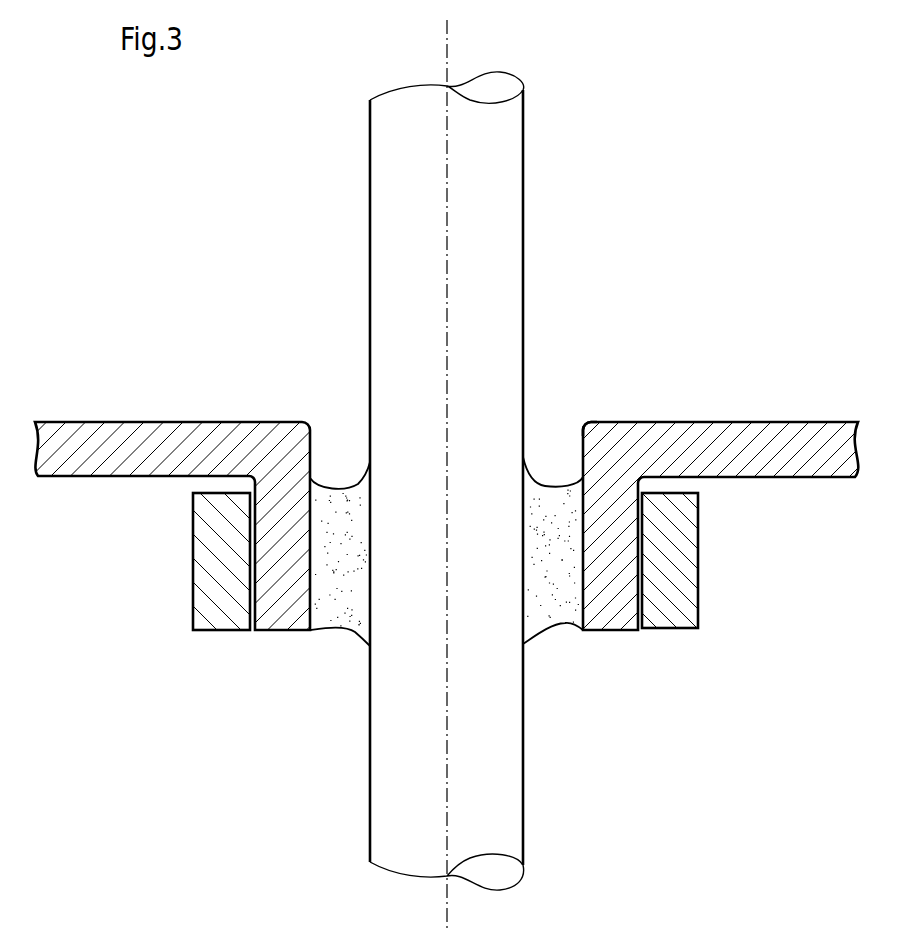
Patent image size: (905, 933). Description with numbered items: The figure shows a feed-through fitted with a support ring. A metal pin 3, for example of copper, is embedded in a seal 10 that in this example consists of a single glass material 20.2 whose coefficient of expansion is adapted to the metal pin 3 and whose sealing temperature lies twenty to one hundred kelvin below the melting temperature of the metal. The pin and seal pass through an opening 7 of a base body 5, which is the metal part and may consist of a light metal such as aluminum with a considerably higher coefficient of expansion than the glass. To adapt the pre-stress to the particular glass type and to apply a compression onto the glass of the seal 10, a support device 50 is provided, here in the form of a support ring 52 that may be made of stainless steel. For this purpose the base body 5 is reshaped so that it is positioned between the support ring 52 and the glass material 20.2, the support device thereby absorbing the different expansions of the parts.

The metal pin 3 is at (498, 226).
The base body 5 is at (664, 437).
The opening 7 is at (584, 420).
The seal 10 is at (556, 510).
The glass material 20.2 is at (548, 622).
The support device 50 is at (660, 607).
The support ring 52 is at (686, 514).